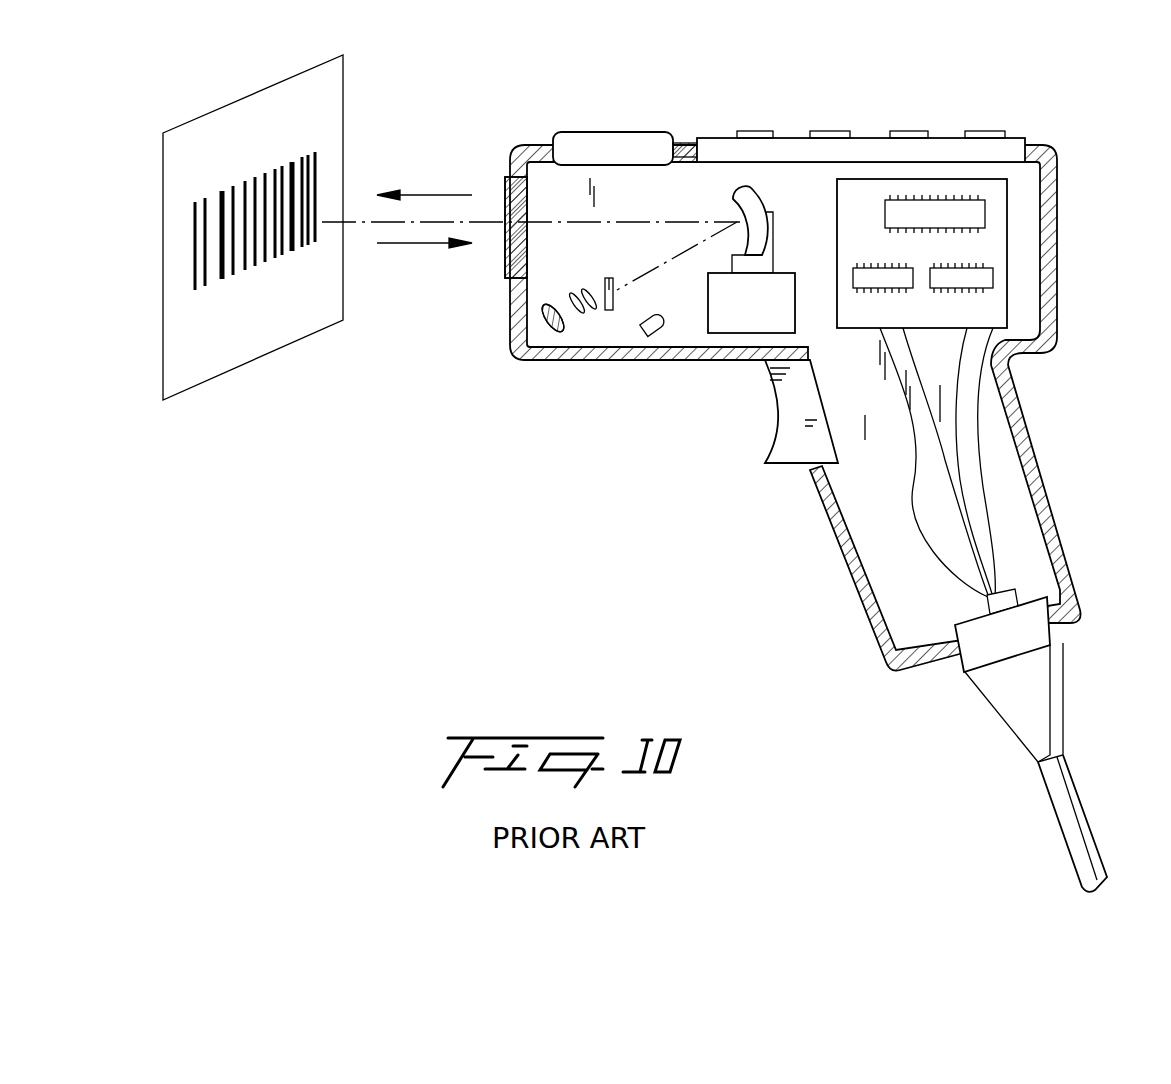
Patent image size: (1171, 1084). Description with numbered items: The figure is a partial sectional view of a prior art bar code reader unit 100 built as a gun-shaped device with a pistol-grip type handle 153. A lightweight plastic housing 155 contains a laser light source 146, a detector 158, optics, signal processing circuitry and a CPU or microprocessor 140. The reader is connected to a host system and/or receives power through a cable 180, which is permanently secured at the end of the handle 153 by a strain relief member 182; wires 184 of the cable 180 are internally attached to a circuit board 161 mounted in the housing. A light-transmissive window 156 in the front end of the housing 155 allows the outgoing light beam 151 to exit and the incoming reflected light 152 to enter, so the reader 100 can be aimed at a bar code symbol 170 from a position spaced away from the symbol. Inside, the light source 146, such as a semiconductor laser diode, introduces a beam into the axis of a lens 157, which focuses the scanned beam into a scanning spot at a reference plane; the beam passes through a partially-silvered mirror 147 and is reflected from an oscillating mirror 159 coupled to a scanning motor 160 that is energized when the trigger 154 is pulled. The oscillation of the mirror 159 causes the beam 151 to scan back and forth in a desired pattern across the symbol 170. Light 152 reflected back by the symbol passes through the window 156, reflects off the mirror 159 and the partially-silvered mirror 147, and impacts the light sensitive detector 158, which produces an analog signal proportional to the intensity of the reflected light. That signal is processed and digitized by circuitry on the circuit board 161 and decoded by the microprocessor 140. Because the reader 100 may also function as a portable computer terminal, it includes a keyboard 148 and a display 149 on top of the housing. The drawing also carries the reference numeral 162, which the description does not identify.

The bar code reader unit 100 is at (640, 522).
The microprocessor 140 is at (897, 210).
The laser light source 146 is at (548, 323).
The partially-silvered mirror 147 is at (613, 318).
The keyboard 148 is at (953, 148).
The display 149 is at (600, 133).
The outgoing light beam 151 is at (443, 193).
The reflected light 152 is at (437, 248).
The handle 153 is at (848, 565).
The trigger 154 is at (770, 445).
The housing 155 is at (1058, 283).
The light-transmissive window 156 is at (505, 185).
The lens 157 is at (587, 327).
The detector 158 is at (663, 324).
The oscillating mirror 159 is at (755, 193).
The scanning motor 160 is at (760, 318).
The circuit board 161 is at (1010, 222).
The handle rear wall 162 is at (1000, 433).
The bar code symbol 170 is at (285, 163).
The cable 180 is at (1077, 825).
The strain relief member 182 is at (1063, 642).
The wires 184 is at (913, 480).